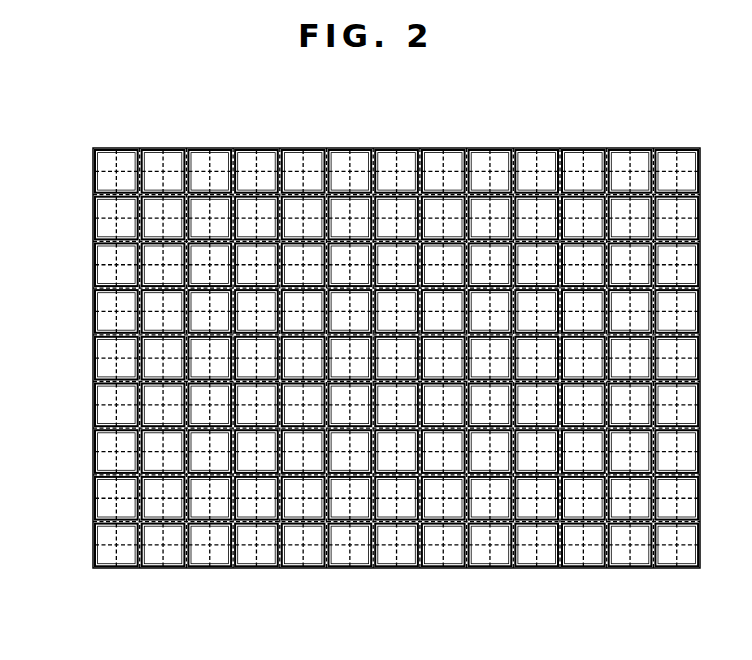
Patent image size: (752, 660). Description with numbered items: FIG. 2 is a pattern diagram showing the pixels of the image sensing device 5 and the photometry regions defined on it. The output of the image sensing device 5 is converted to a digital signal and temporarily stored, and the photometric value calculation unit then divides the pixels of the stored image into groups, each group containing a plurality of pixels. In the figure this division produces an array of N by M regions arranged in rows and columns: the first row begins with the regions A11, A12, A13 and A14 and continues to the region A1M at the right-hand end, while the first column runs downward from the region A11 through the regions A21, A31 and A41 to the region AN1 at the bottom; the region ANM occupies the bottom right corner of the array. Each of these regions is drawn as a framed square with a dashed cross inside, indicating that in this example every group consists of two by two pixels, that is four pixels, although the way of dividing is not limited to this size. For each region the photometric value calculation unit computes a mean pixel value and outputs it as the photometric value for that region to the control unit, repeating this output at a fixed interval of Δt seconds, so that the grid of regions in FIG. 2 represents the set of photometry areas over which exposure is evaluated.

The image sensing device 5 is at (592, 148).
The region A11 is at (107, 160).
The region A12 is at (150, 160).
The region A13 is at (198, 160).
The region A14 is at (248, 160).
The region A1M is at (667, 162).
The region A21 is at (100, 213).
The region A31 is at (100, 259).
The region A41 is at (100, 305).
The region AN1 is at (102, 535).
The region ANM is at (687, 558).